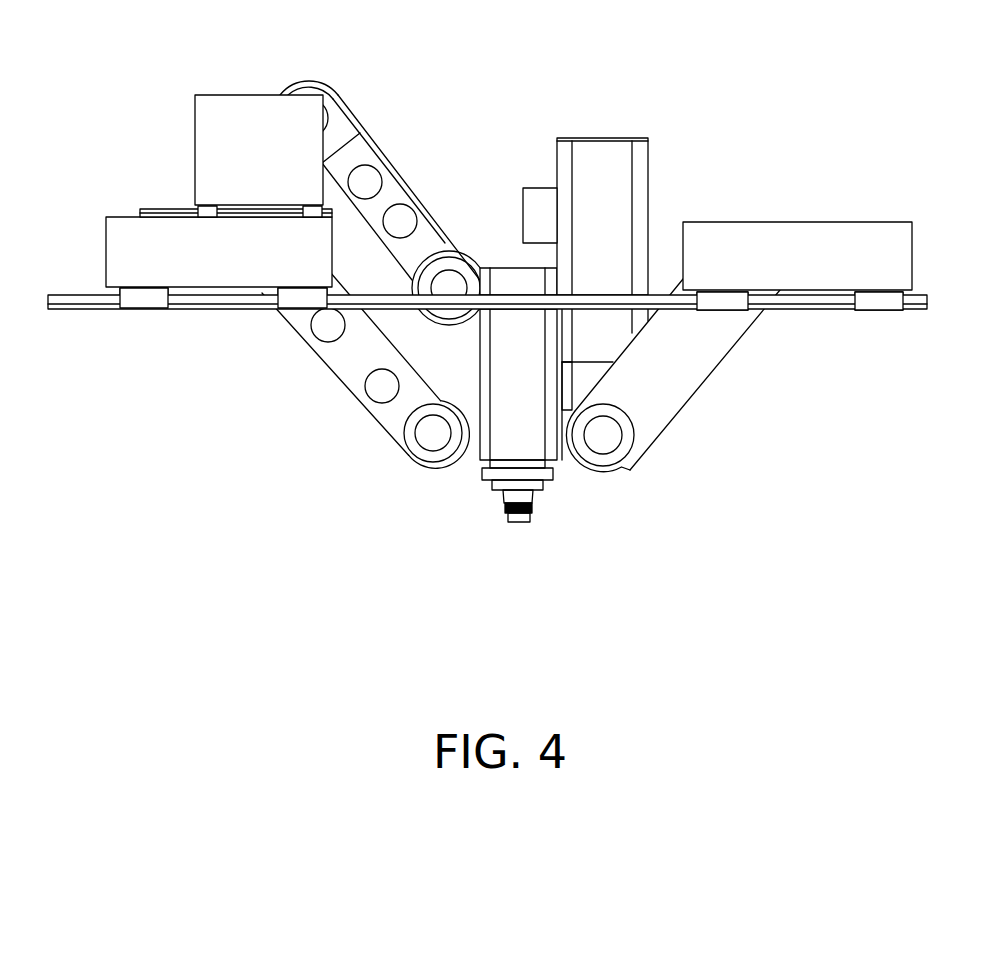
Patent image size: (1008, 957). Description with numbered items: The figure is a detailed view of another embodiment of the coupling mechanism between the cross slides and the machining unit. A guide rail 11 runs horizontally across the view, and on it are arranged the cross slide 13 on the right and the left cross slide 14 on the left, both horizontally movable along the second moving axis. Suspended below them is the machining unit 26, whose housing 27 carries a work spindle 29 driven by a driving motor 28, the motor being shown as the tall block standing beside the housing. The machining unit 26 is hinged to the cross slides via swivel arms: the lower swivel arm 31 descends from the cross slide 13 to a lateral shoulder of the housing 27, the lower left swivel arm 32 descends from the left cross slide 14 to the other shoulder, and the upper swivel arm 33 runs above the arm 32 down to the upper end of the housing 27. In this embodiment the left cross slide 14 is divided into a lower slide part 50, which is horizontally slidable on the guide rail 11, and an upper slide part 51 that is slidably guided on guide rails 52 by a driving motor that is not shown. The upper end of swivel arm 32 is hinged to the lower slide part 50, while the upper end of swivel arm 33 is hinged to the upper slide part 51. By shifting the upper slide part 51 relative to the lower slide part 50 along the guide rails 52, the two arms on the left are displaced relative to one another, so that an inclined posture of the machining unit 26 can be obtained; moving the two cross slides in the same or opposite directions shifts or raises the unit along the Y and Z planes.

The guide rail 11 is at (87, 297).
The cross slide 13 is at (757, 178).
The left cross slide 14 is at (211, 209).
The machining unit 26 is at (512, 445).
The housing 27 is at (500, 447).
The driving motor 28 is at (605, 150).
The work spindle 29 is at (533, 465).
The lower swivel arm 31 is at (683, 372).
The lower left swivel arm 32 is at (345, 360).
The upper swivel arm 33 is at (382, 150).
The lower slide part 50 is at (227, 262).
The upper slide part 51 is at (237, 108).
The guide rails 52 is at (153, 207).